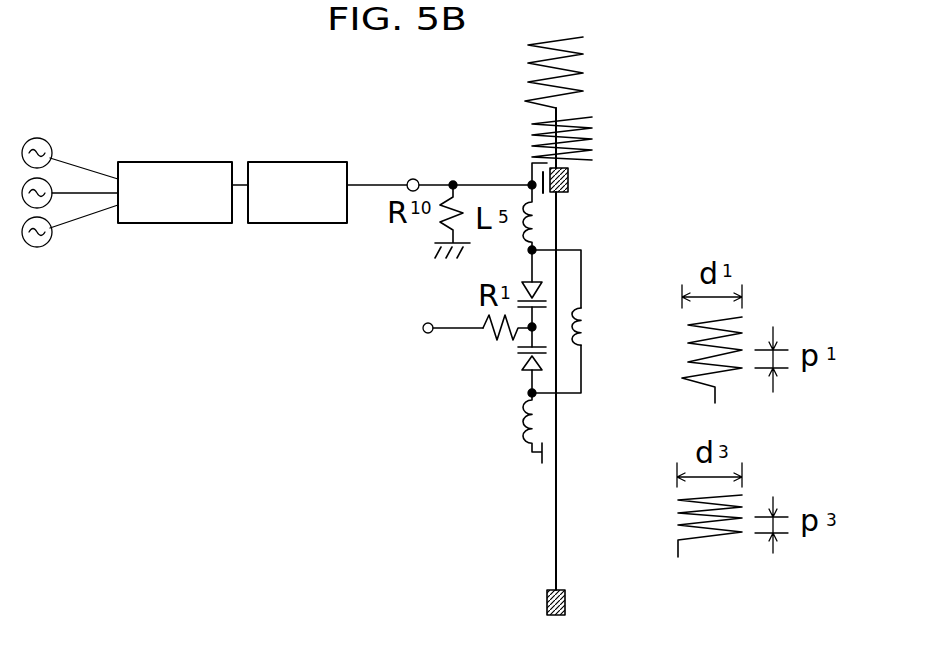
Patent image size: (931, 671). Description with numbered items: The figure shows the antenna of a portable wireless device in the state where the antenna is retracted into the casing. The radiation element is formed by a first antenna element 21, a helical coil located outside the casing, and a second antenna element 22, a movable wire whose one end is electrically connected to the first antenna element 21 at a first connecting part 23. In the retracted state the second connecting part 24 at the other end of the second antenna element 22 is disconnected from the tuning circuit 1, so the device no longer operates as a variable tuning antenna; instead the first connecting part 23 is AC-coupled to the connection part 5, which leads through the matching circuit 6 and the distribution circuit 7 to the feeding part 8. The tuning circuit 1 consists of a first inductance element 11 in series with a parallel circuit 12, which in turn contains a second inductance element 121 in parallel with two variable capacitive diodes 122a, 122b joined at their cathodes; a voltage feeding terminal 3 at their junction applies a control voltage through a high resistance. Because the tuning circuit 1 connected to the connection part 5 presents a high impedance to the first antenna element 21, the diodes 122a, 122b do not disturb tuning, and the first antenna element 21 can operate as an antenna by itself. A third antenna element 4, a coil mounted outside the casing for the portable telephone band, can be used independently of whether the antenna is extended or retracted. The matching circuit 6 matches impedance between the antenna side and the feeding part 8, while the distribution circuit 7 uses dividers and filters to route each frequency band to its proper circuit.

The tuning circuit 1 is at (266, 382).
The voltage feeding terminal 3 is at (423, 325).
The third antenna element 4 is at (590, 128).
The connection part 5 is at (532, 185).
The matching circuit 6 is at (310, 170).
The distribution circuit 7 is at (208, 170).
The feeding part 8 is at (50, 146).
The first inductance element 11 is at (518, 437).
The parallel circuit 12 is at (338, 345).
The first antenna element 21 is at (580, 70).
The second antenna element 22 is at (557, 229).
The first connecting part 23 is at (570, 178).
The second connecting part 24 is at (565, 600).
The second inductance element 121 is at (570, 348).
The variable capacitive diode 122a is at (518, 352).
The variable capacitive diode 122b is at (519, 282).